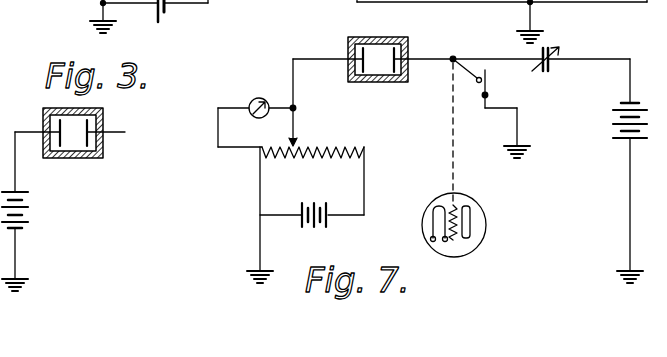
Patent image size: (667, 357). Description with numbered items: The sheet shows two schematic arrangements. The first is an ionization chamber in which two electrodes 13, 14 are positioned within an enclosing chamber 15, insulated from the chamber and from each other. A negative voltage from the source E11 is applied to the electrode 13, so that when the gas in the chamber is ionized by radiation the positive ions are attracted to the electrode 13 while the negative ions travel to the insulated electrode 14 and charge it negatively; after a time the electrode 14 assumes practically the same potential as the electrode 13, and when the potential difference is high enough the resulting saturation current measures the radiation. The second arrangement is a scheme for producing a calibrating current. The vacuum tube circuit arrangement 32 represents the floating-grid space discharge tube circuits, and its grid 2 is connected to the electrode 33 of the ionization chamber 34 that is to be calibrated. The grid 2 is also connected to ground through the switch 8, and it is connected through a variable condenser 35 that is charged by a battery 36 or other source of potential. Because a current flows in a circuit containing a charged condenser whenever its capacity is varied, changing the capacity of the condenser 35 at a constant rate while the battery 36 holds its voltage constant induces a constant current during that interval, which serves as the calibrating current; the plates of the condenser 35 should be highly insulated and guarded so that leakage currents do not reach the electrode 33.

In FIG. 3, the electrode 13 is at (60, 118).
In FIG. 3, the electrode 14 is at (87, 118).
In FIG. 3, the enclosing chamber 15 is at (80, 158).
In FIG. 3, the negative voltage source E11 is at (38, 212).
In FIG. 7, the electrode 33 is at (409, 46).
In FIG. 7, the ionization chamber 34 is at (350, 40).
In FIG. 7, the switch 8 is at (476, 89).
In FIG. 7, the grid 2 is at (457, 206).
In FIG. 7, the vacuum tube circuit arrangement 32 is at (494, 214).
In FIG. 7, the variable condenser 35 is at (553, 45).
In FIG. 7, the battery 36 is at (607, 129).